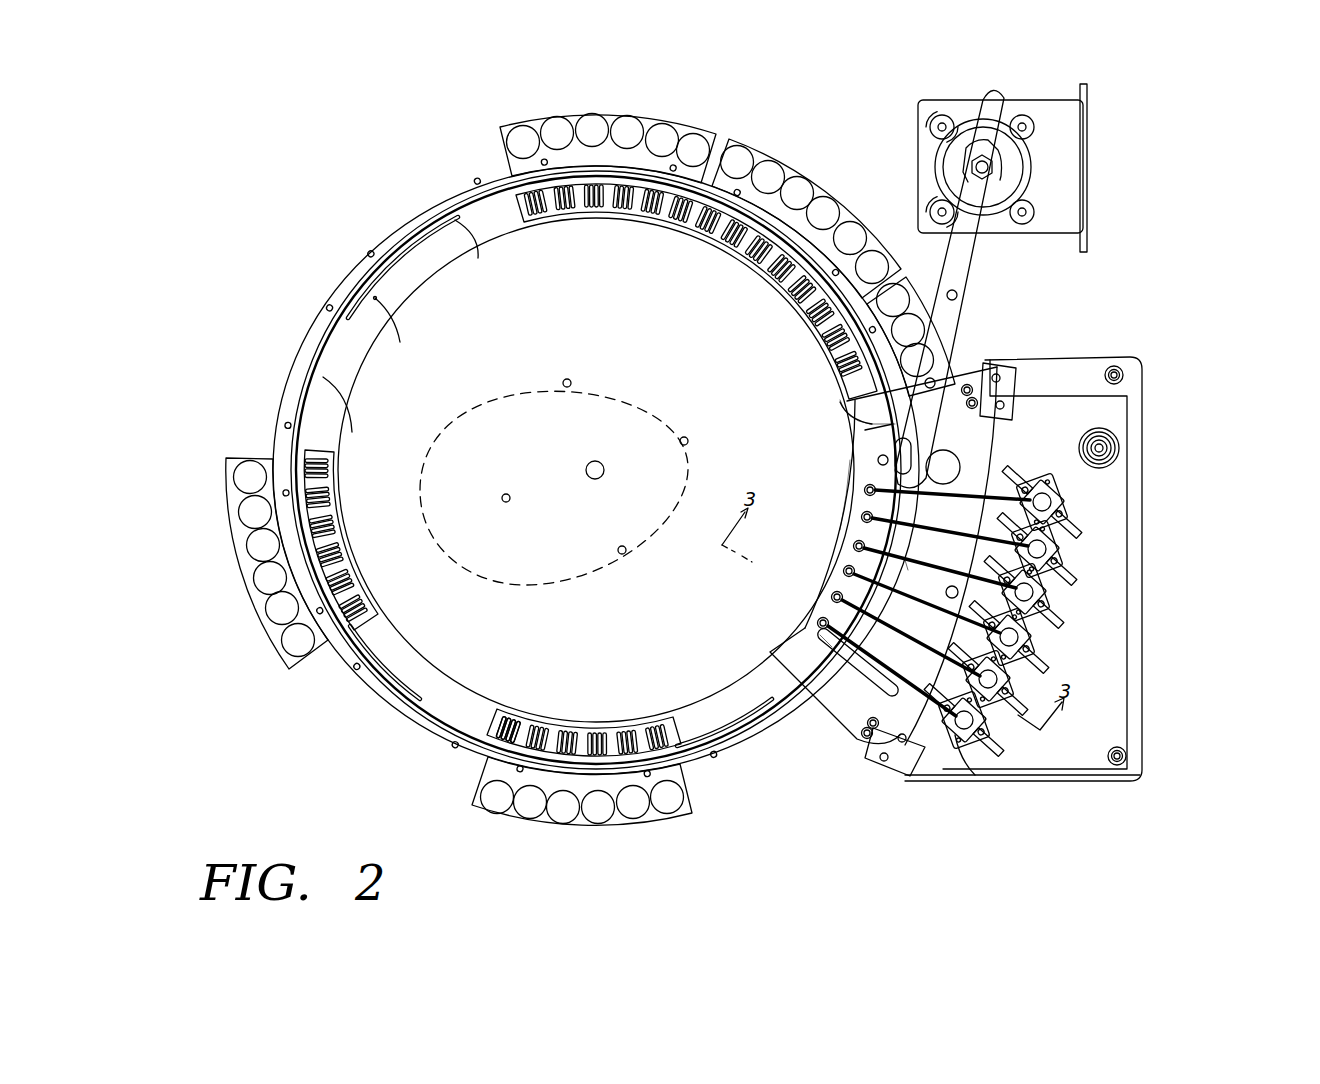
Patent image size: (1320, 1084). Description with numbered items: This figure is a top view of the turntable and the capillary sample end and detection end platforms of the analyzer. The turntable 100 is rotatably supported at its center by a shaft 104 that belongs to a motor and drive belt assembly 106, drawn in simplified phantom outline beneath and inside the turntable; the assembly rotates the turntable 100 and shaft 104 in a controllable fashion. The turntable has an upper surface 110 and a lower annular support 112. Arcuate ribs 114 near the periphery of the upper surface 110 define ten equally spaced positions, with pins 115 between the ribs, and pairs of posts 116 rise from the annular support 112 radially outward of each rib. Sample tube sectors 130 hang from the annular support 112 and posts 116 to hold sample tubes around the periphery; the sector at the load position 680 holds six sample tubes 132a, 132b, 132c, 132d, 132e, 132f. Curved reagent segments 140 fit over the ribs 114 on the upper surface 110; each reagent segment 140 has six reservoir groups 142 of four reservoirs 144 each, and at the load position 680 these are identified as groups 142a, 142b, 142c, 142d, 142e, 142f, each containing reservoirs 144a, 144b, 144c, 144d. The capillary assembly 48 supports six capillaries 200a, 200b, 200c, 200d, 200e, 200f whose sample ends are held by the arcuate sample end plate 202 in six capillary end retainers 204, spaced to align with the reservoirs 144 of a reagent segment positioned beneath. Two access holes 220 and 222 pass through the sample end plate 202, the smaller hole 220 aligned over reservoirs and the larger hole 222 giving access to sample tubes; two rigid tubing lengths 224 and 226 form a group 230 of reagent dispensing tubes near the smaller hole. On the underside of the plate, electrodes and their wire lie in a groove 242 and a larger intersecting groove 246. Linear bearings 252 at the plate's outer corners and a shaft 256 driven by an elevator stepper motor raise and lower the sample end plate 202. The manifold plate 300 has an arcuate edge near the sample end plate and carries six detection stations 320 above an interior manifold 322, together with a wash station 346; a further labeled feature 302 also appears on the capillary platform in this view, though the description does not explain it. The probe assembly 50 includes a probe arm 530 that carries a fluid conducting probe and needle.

The capillary assembly 48 is at (1117, 805).
The probe assembly 50 is at (1086, 130).
The turntable 100 is at (688, 753).
The shaft 104 is at (590, 462).
The motor and drive belt assembly 106 is at (508, 398).
The upper surface 110 is at (600, 294).
The lower annular support 112 is at (745, 748).
The arcuate ribs 114 is at (410, 326).
The pins 115 is at (399, 331).
The posts 116 is at (341, 580).
The sample tube sector 130 is at (798, 170).
The sample tube 132a is at (476, 795).
The sample tube 132b is at (518, 813).
The sample tube 132c is at (556, 818).
The sample tube 132d is at (597, 818).
The sample tube 132e is at (637, 818).
The sample tube 132f is at (670, 812).
The reagent segment 140 is at (331, 572).
The reservoir group 142 is at (345, 470).
The reservoir group 142a is at (540, 668).
The reservoir group 142b is at (540, 727).
The reservoir group 142c is at (570, 727).
The reservoir group 142d is at (598, 727).
The reservoir group 142e is at (628, 727).
The reservoir group 142f is at (655, 725).
The reservoir 144 is at (322, 502).
The reservoir 144a is at (505, 715).
The reservoir 144b is at (510, 718).
The reservoir 144c is at (516, 720).
The reservoir 144d is at (522, 722).
The capillary 200a is at (820, 627).
The capillary 200b is at (834, 594).
The capillary 200c is at (846, 568).
The capillary 200d is at (918, 566).
The capillary 200e is at (863, 514).
The capillary 200f is at (866, 486).
The sample end plate 202 is at (838, 718).
The capillary end retainer 204 is at (855, 543).
The access hole 220 is at (880, 462).
The access hole 222 is at (960, 470).
The rigid tubing length 224 is at (846, 410).
The rigid tubing length 226 is at (868, 428).
The group of reagent dispensing tubes 230 is at (807, 400).
The groove 242 is at (828, 630).
The larger intersecting groove 246 is at (835, 660).
The linear bearing 252 is at (980, 380).
The shaft 256 is at (945, 595).
The manifold plate 300 is at (1070, 357).
The arc plate 302 is at (845, 478).
The detection station 320 is at (1045, 600).
The manifold 322 is at (950, 770).
The wash station 346 is at (1118, 448).
The probe arm 530 is at (972, 250).
The load position 680 is at (455, 810).